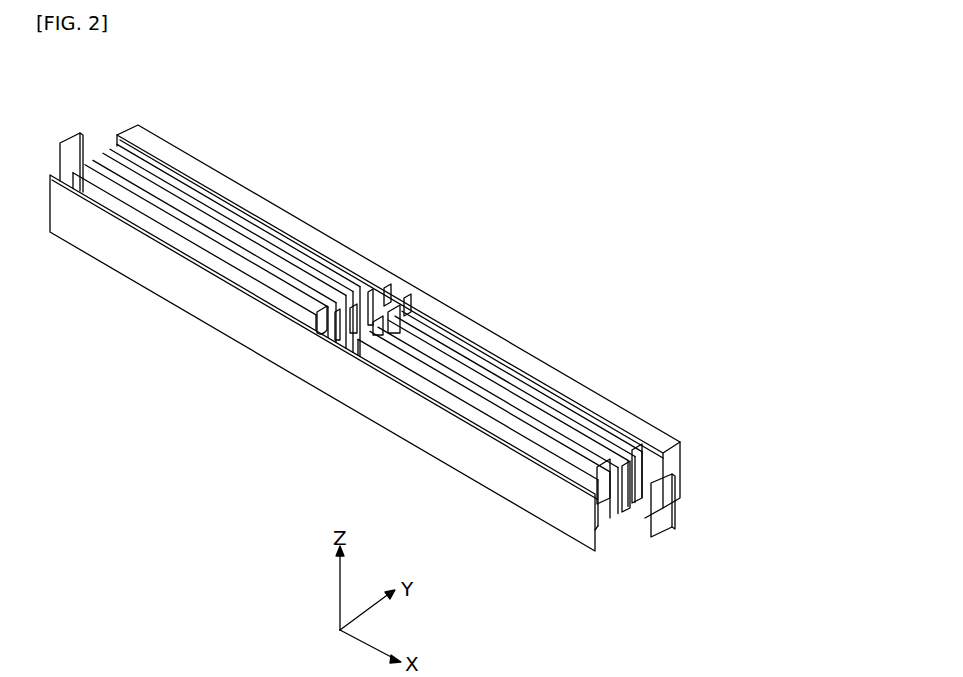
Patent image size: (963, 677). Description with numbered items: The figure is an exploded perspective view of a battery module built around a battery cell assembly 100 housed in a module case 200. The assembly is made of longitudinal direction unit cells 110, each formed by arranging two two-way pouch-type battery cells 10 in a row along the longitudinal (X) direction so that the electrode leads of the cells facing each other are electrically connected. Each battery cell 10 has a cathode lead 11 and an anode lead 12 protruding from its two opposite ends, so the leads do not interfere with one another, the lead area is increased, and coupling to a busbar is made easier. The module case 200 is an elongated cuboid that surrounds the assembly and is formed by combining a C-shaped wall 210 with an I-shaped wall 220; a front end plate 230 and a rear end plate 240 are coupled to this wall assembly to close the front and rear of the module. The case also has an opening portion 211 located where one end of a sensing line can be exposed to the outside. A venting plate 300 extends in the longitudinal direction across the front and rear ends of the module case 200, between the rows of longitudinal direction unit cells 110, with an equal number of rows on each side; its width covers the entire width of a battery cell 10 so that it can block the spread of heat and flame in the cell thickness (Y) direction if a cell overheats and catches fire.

The battery cell 10 is at (302, 315).
The cathode lead 11 is at (645, 508).
The anode lead 12 is at (603, 518).
The battery cell assembly 100 is at (229, 456).
The longitudinal direction unit cell 110 is at (302, 438).
The module case 200 is at (354, 239).
The C-shaped wall 210 is at (293, 228).
The opening portion 211 is at (392, 283).
The I-shaped wall 220 is at (162, 262).
The front end plate 230 is at (673, 514).
The rear end plate 240 is at (68, 141).
The venting plate 300 is at (214, 222).